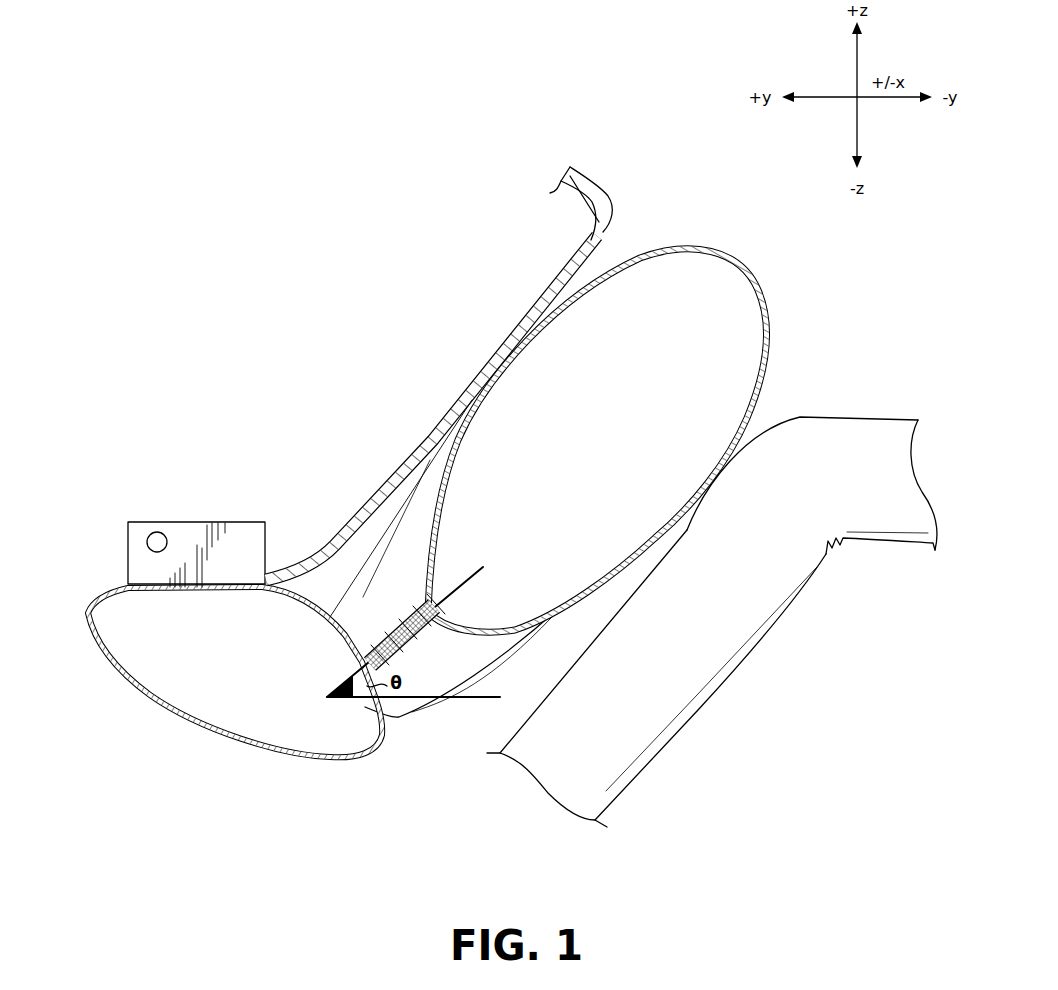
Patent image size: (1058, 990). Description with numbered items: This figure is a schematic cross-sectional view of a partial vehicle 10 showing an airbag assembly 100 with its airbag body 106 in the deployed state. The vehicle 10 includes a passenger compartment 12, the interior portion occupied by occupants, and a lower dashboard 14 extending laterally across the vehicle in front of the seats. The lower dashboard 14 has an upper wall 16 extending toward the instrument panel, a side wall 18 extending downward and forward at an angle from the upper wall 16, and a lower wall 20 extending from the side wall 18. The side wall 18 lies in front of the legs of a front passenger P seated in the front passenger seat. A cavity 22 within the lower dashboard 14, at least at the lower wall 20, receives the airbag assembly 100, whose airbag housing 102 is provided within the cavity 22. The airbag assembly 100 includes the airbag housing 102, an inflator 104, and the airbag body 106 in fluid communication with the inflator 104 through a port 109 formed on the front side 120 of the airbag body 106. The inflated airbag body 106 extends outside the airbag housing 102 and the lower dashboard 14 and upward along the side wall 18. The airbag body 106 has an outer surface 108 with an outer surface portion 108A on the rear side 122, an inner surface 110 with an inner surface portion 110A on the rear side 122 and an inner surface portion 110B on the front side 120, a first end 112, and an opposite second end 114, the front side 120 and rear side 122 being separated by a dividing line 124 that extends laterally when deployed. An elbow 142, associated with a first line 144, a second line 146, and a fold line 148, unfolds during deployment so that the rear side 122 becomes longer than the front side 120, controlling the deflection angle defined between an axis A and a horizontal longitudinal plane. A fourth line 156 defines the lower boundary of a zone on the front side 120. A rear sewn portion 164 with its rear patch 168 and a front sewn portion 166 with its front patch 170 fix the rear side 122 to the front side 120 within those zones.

The vehicle 10 is at (226, 326).
The passenger compartment 12 is at (893, 360).
The lower dashboard 14 is at (523, 300).
The upper wall 16 is at (590, 183).
The side wall 18 is at (597, 257).
The lower wall 20 is at (272, 570).
The cavity 22 is at (338, 470).
The airbag assembly 100 is at (165, 736).
The airbag housing 102 is at (207, 521).
The inflator 104 is at (157, 533).
The airbag body 106 is at (435, 766).
The outer surface 108 is at (688, 245).
The outer surface portion 108A is at (450, 445).
The port 109 is at (185, 593).
The inner surface 110 is at (713, 252).
The inner surface portion 110A is at (450, 450).
The inner surface portion 110B is at (597, 588).
The first end 112 is at (97, 605).
The second end 114 is at (87, 620).
The front side 120 is at (527, 372).
The rear side 122 is at (640, 528).
The dividing line 124 is at (746, 258).
The elbow 142 is at (337, 783).
The first line 144 is at (287, 760).
The second line 146 is at (388, 712).
The fold line 148 is at (374, 758).
The fourth line 156 is at (358, 661).
The rear sewn portion 164 is at (428, 666).
The front sewn portion 166 is at (385, 605).
The rear patch 168 is at (449, 650).
The front patch 170 is at (412, 592).
The axis A is at (458, 592).
The front passenger P is at (840, 432).